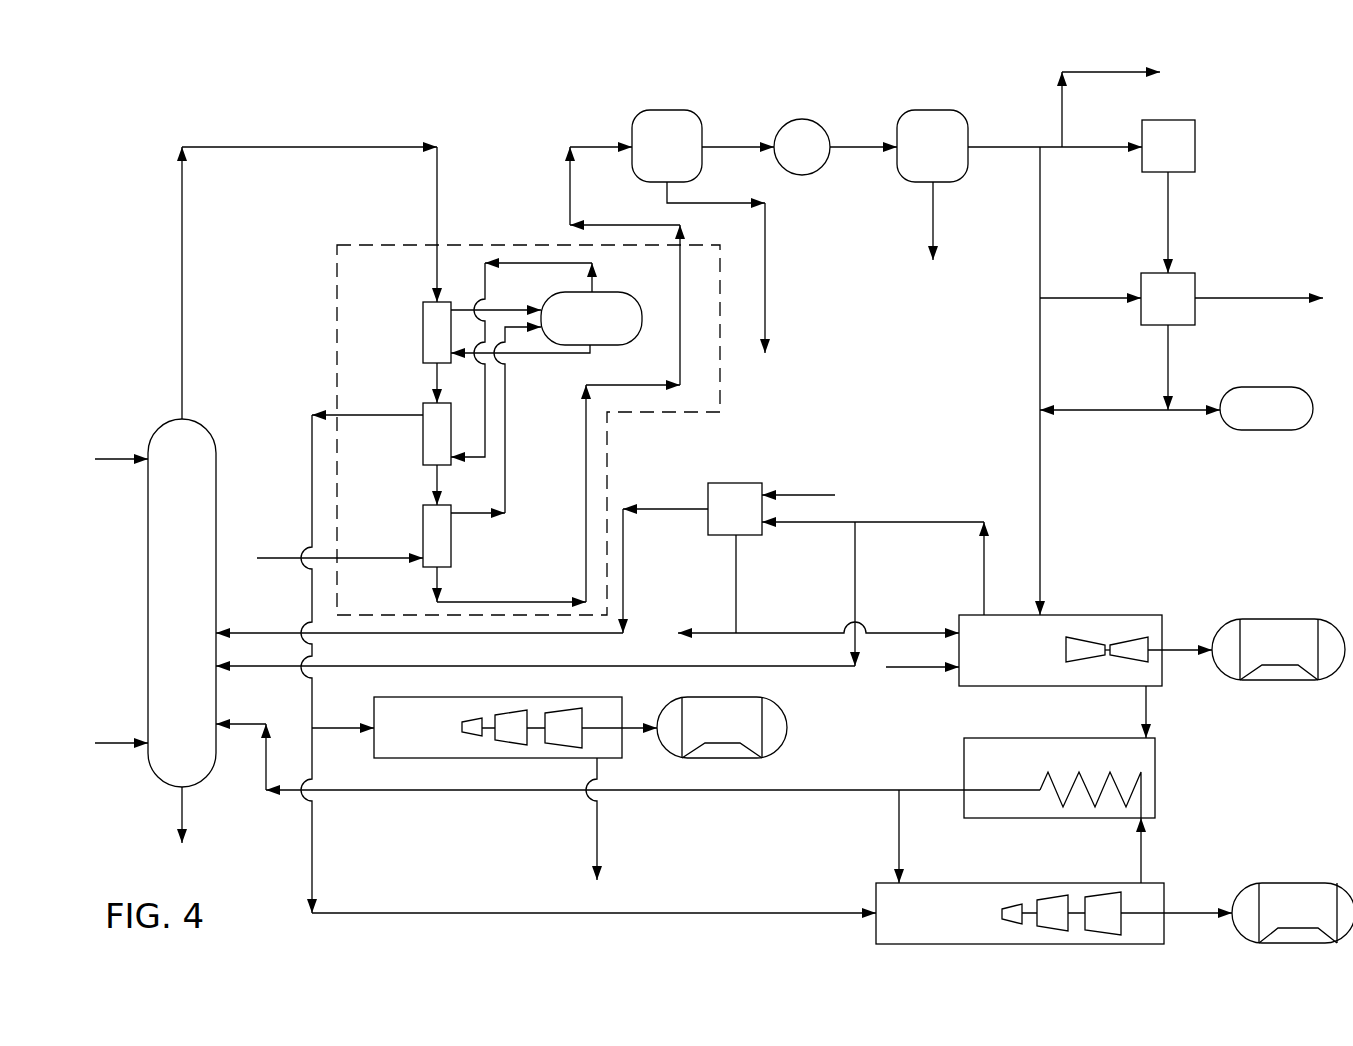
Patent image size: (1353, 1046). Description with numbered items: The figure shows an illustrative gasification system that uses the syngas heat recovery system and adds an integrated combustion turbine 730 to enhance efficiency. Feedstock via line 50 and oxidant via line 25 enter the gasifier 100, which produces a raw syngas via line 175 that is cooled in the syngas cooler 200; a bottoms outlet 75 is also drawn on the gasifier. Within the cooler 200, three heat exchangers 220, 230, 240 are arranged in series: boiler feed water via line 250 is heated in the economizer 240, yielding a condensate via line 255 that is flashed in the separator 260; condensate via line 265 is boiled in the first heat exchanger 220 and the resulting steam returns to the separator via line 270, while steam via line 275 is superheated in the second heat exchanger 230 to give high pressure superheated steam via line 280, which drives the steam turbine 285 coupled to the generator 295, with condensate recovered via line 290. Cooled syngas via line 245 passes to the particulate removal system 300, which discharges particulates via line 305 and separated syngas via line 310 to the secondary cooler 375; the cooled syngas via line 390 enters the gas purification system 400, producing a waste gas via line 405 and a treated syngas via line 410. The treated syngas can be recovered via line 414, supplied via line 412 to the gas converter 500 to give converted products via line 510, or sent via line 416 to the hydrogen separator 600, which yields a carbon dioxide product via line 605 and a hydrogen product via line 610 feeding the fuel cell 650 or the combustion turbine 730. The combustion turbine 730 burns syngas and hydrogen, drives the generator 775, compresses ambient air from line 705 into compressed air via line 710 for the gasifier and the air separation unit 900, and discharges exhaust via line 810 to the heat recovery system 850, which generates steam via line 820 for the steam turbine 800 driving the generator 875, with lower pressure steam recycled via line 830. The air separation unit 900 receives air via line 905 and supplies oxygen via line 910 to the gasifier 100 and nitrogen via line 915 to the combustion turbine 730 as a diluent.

The oxidant line 25 is at (108, 742).
The feedstock line 50 is at (108, 458).
The bottoms stream 75 is at (183, 807).
The gasifier 100 is at (165, 616).
The raw syngas line 175 is at (307, 146).
The syngas cooler 200 is at (664, 414).
The first heat exchanger 220 is at (423, 330).
The second heat exchanger 230 is at (423, 436).
The third heat exchanger 240 is at (451, 546).
The cooled syngas line 245 is at (596, 146).
The heat transfer medium line 250 is at (264, 556).
The condensate line 255 is at (507, 476).
The separator 260 is at (574, 330).
The condensate line 265 is at (549, 356).
The steam line 270 is at (467, 300).
The steam line 275 is at (533, 262).
The superheated steam line 280 is at (311, 455).
The steam turbine 285 is at (397, 738).
The condensate line 290 is at (598, 829).
The generator 295 is at (706, 735).
The particulate removal system 300 is at (651, 158).
The separated particulates line 305 is at (767, 299).
The separated syngas line 310 is at (730, 146).
The secondary cooler 375 is at (786, 162).
The cooled separated syngas line 390 is at (853, 146).
The gas purification system 400 is at (916, 158).
The waste gas line 405 is at (935, 206).
The treated syngas line 410 is at (991, 146).
The treated syngas supply line 412 is at (1100, 149).
The treated syngas recovery line 414 is at (1063, 100).
The treated syngas line to hydrogen separator 416 is at (1086, 300).
The gas converter 500 is at (1152, 160).
The converted syngas line 510 is at (1170, 205).
The hydrogen separator 600 is at (1152, 313).
The carbon dioxide product line 605 is at (1260, 297).
The hydrogen product line 610 is at (1170, 360).
The fuel cell 650 is at (1251, 421).
The ambient air line 705 is at (910, 668).
The compressed air line 710 is at (893, 521).
The combustion turbine 730 is at (987, 656).
The generator 775 is at (1263, 655).
The steam turbine 800 is at (914, 928).
The combustion turbine exhaust gas line 810 is at (1148, 700).
The steam line 820 is at (934, 792).
The lower pressure steam line 830 is at (1143, 853).
The heat recovery system 850 is at (987, 773).
The generator 875 is at (1281, 920).
The air separation unit 900 is at (719, 523).
The air line 905 is at (820, 494).
The oxygen line 910 is at (266, 632).
The nitrogen line 915 is at (738, 565).